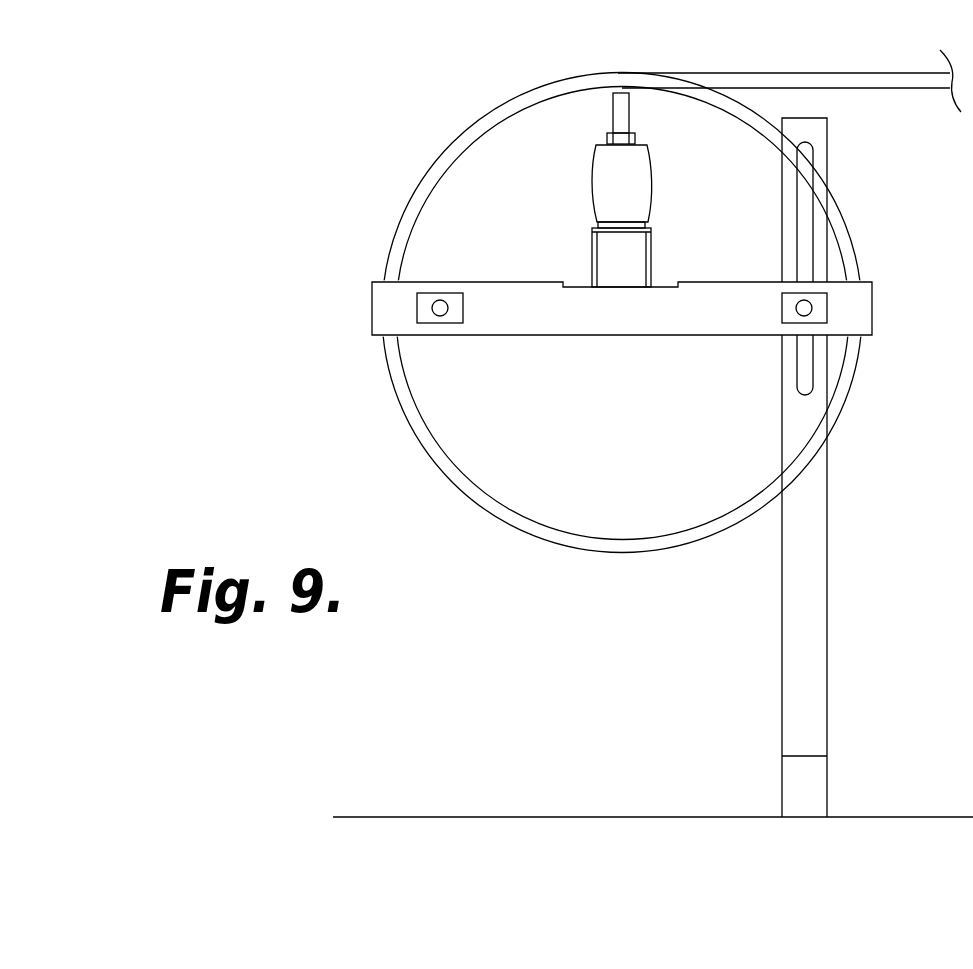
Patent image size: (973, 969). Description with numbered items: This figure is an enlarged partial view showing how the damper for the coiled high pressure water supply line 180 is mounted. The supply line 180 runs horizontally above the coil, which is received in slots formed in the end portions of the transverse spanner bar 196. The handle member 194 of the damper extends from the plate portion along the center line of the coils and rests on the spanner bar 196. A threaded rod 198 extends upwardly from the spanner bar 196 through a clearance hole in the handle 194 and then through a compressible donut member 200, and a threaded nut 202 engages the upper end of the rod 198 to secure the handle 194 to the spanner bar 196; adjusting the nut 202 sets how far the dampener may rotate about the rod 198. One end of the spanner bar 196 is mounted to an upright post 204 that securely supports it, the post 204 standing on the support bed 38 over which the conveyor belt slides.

The support bed 38 is at (455, 817).
The supply line 180 is at (784, 78).
The handle member 194 is at (591, 248).
The spanner bar 196 is at (489, 337).
The threaded rod 198 is at (622, 117).
The compressible donut member 200 is at (591, 183).
The threaded nut 202 is at (607, 137).
The upright post 204 is at (793, 690).